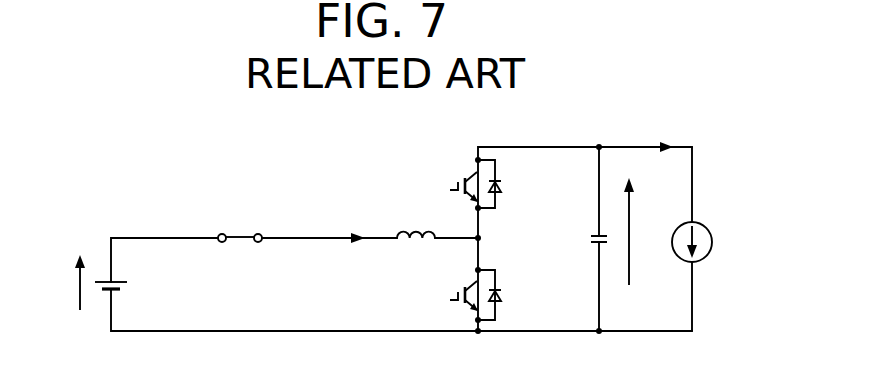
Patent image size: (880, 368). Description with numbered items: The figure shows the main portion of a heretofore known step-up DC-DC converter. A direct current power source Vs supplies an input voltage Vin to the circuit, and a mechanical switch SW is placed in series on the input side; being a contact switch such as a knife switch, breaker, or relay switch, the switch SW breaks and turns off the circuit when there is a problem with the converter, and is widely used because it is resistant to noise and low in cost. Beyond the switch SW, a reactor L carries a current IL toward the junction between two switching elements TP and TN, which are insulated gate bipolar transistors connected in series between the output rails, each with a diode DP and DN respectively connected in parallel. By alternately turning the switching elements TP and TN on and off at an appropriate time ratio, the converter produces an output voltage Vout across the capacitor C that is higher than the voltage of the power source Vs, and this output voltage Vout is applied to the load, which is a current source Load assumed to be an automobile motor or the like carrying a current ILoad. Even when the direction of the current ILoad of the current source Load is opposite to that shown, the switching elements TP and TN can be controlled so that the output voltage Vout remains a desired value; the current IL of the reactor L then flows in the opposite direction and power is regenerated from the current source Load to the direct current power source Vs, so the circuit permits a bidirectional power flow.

The input voltage Vin is at (60, 282).
The direct current power source Vs is at (122, 283).
The mechanical switch SW is at (240, 257).
The current of reactor IL is at (349, 220).
The reactor L is at (416, 217).
The switching element (IGBT) TP is at (450, 174).
The diode DP is at (508, 177).
The switching element (IGBT) TN is at (450, 289).
The diode DN is at (511, 293).
The capacitor C is at (587, 239).
The current of current source ILoad is at (653, 128).
The output voltage Vout is at (639, 247).
The current source Load is at (725, 239).